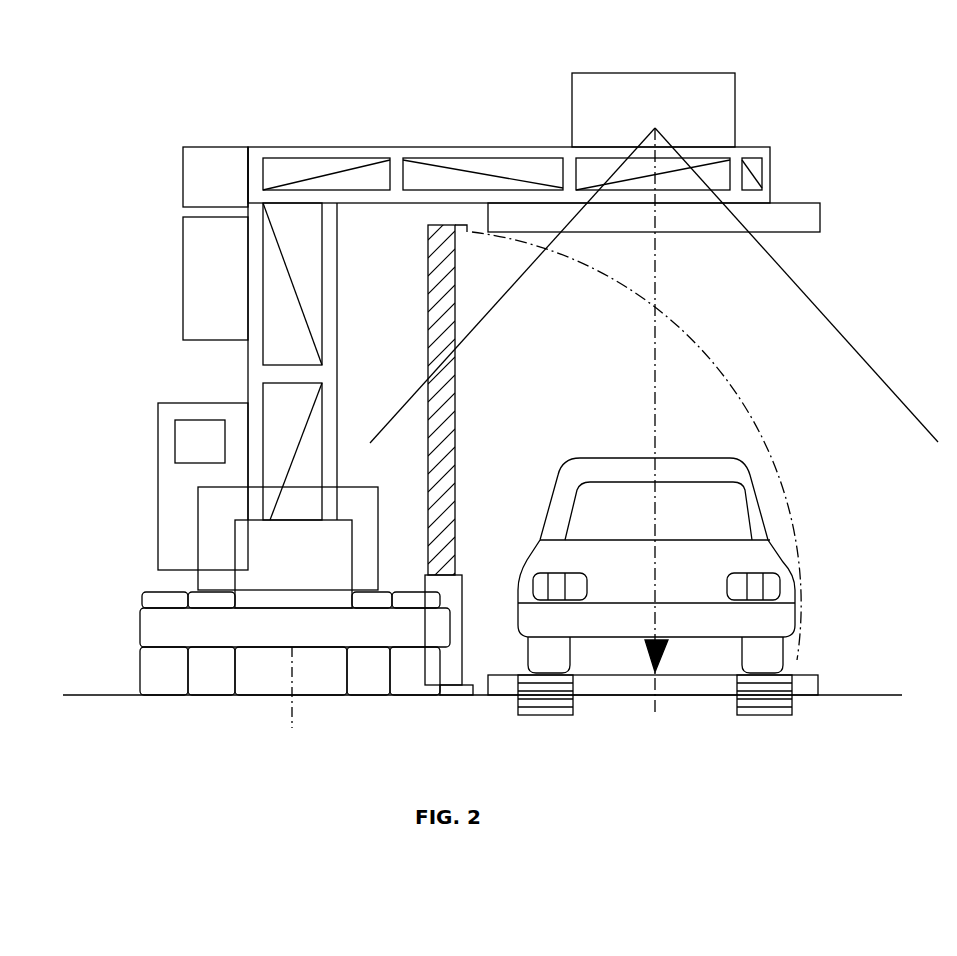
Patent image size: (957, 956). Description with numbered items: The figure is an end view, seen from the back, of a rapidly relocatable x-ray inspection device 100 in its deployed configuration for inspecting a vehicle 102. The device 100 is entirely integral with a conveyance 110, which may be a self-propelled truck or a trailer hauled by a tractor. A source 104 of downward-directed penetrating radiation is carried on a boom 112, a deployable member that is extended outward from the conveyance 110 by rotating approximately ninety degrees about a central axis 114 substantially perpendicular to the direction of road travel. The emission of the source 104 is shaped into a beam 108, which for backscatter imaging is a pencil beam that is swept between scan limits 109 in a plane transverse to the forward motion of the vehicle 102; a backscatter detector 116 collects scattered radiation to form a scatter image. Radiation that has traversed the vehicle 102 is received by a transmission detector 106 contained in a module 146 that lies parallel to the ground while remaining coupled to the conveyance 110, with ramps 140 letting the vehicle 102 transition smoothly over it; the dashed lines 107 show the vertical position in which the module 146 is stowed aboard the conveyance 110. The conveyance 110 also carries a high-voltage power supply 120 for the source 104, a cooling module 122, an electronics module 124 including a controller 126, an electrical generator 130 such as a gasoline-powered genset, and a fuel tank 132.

The rapidly relocatable x-ray inspection device 100 is at (238, 98).
The vehicle 102 is at (598, 458).
The source 104 is at (712, 90).
The transmission detector 106 is at (813, 683).
The dashed lines 107 is at (429, 268).
The beam 108 is at (654, 378).
The scan limits 109 is at (500, 292).
The conveyance 110 is at (120, 665).
The boom 112 is at (772, 151).
The central axis 114 is at (282, 704).
The backscatter detector 116 is at (820, 215).
The high-voltage power supply 120 is at (205, 181).
The cooling module 122 is at (200, 297).
The electronics module 124 is at (172, 511).
The controller 126 is at (193, 442).
The electrical generator 130 is at (352, 497).
The fuel tank 132 is at (311, 571).
The ramps 140 is at (540, 715).
The module 146 is at (828, 646).